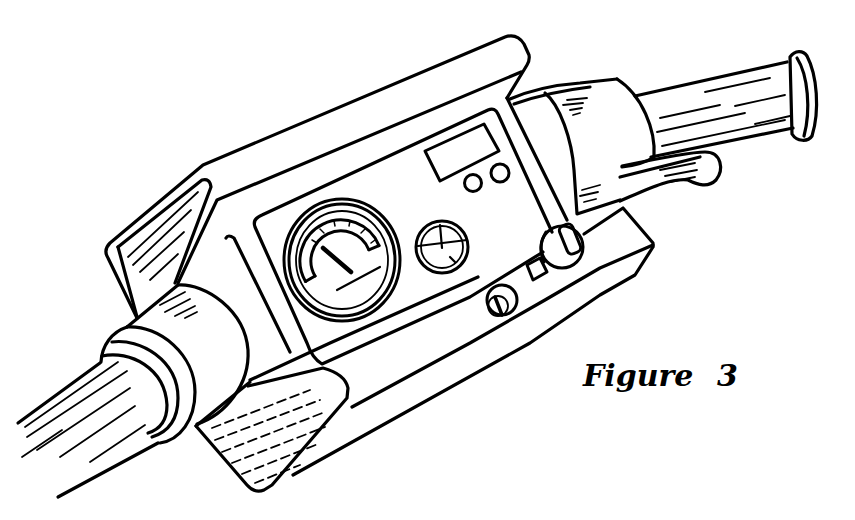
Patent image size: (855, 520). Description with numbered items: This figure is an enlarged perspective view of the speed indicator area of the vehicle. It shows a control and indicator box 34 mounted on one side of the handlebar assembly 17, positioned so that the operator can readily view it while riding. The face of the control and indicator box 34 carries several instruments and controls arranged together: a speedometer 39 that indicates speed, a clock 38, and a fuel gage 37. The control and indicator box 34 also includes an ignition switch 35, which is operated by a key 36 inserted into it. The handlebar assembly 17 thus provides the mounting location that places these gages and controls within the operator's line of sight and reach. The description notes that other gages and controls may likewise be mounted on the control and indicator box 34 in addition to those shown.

The control and indicator box 34 is at (366, 92).
The handlebar assembly 17 is at (600, 82).
The speedometer 39 is at (345, 197).
The clock 38 is at (430, 169).
The fuel gage 37 is at (468, 250).
The key 36 is at (586, 245).
The ignition switch 35 is at (510, 311).